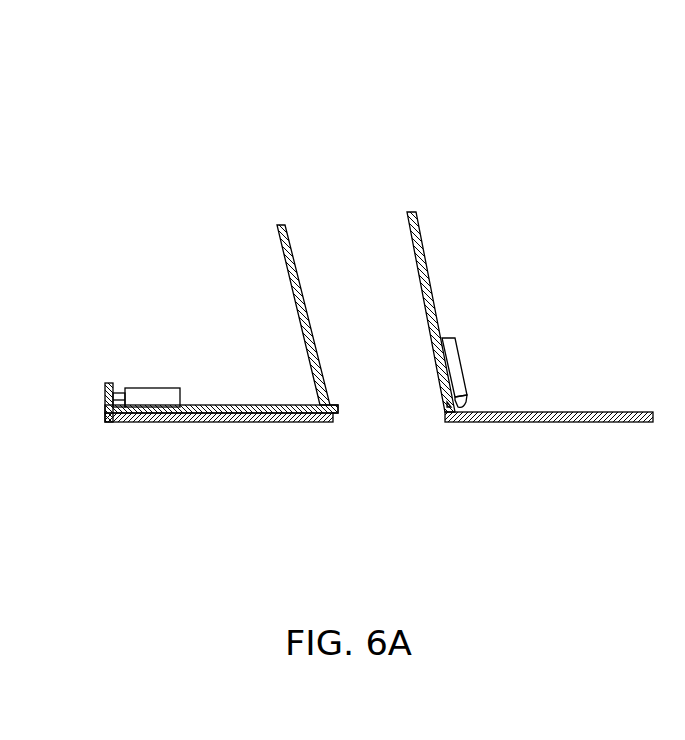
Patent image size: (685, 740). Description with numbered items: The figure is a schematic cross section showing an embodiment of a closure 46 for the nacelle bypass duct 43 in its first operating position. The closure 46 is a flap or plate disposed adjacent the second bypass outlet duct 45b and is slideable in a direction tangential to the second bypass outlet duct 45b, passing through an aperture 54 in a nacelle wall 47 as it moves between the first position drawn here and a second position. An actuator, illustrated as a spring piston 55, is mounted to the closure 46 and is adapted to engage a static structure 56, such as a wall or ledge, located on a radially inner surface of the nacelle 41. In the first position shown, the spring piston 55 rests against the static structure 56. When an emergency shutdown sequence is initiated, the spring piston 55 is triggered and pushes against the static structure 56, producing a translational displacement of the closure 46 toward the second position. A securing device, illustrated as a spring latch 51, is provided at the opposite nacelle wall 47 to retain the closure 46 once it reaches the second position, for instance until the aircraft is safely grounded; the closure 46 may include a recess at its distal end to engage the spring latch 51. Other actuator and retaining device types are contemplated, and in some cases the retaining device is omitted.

The nacelle 41 is at (182, 425).
The nacelle bypass duct 43 is at (347, 226).
The second bypass outlet duct 45b is at (395, 427).
The closure 46 is at (272, 420).
The nacelle wall 47 is at (428, 296).
The spring latch 51 is at (479, 388).
The aperture 54 is at (337, 402).
The spring piston 55 is at (155, 386).
The static structure 56 is at (110, 396).